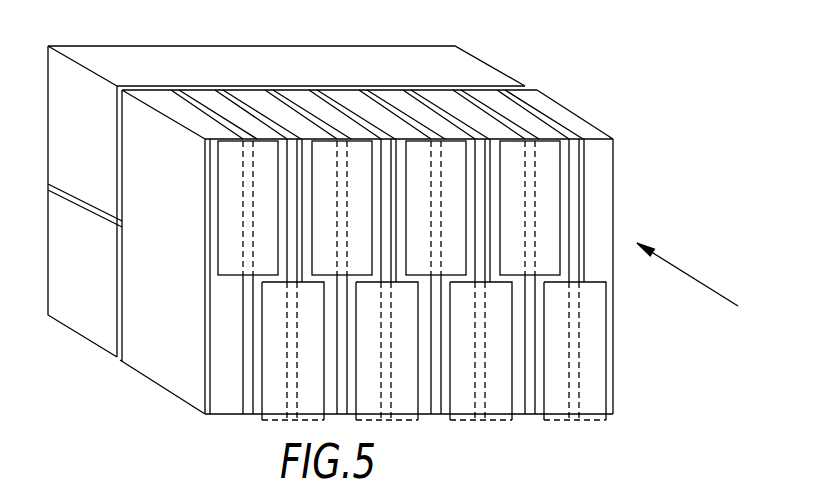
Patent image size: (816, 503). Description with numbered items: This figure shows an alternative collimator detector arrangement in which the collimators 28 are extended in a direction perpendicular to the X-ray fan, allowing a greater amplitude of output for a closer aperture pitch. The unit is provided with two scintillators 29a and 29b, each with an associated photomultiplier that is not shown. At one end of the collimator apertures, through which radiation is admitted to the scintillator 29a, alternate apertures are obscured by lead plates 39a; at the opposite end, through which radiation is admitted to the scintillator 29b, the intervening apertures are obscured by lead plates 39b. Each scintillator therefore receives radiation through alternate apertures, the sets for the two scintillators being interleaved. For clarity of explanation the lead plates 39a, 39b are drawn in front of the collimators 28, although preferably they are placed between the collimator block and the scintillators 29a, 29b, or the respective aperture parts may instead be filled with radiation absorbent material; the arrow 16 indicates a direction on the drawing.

The collimators 28 is at (575, 115).
The scintillator 29a is at (75, 88).
The scintillator 29b is at (83, 320).
The lead plates 39a is at (232, 206).
The lead plates 39b is at (270, 348).
The viewing direction / assembly 16 is at (657, 252).